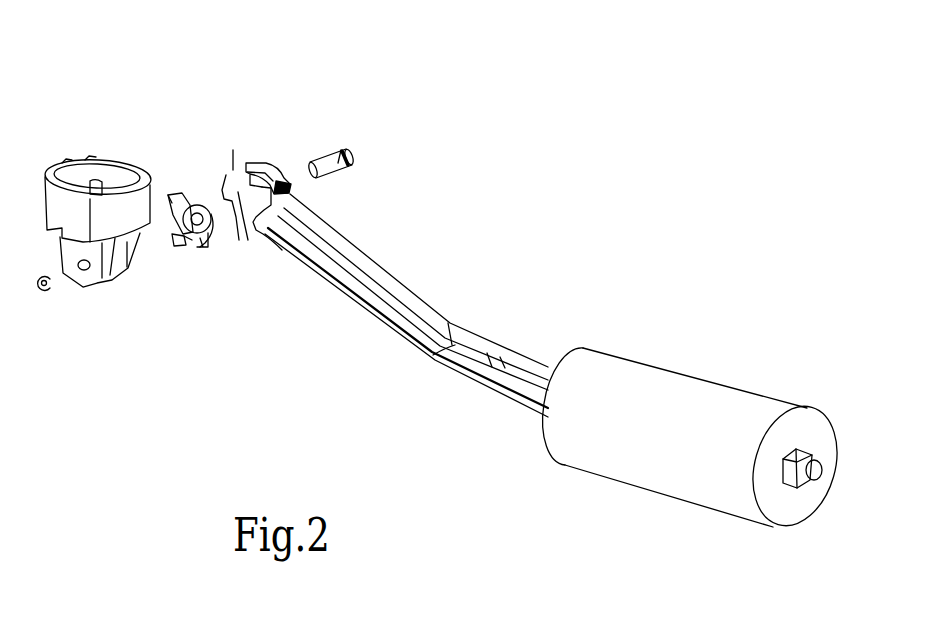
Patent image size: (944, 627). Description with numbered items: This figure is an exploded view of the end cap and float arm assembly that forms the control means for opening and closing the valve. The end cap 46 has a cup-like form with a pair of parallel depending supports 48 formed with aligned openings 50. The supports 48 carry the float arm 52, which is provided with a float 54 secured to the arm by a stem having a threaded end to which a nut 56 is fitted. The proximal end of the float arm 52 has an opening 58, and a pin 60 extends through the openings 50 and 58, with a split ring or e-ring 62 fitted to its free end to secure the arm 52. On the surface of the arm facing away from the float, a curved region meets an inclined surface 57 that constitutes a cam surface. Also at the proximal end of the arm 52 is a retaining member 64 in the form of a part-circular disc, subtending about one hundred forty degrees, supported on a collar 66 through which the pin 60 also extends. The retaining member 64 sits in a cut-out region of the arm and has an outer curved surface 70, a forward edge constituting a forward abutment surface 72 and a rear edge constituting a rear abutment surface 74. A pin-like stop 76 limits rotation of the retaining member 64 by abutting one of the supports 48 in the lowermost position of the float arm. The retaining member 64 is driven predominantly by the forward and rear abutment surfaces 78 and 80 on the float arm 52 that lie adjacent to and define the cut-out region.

The end cap 46 is at (61, 164).
The depending supports 48 is at (83, 288).
The openings 50 is at (73, 270).
The e-ring 62 is at (39, 292).
The outer curved surface 70 is at (170, 193).
The forward abutment surface 72 is at (184, 194).
The rear abutment surface 74 is at (202, 250).
The pin-like stop 76 is at (175, 247).
The retaining member 64 is at (191, 252).
The collar 66 is at (212, 200).
The inclined surface 57 is at (244, 164).
The rear abutment surface 80 is at (246, 166).
The opening 58 is at (240, 195).
The forward abutment surface 78 is at (262, 218).
The pin 60 is at (354, 148).
The float arm 52 is at (423, 342).
The float 54 is at (670, 482).
The nut 56 is at (799, 486).